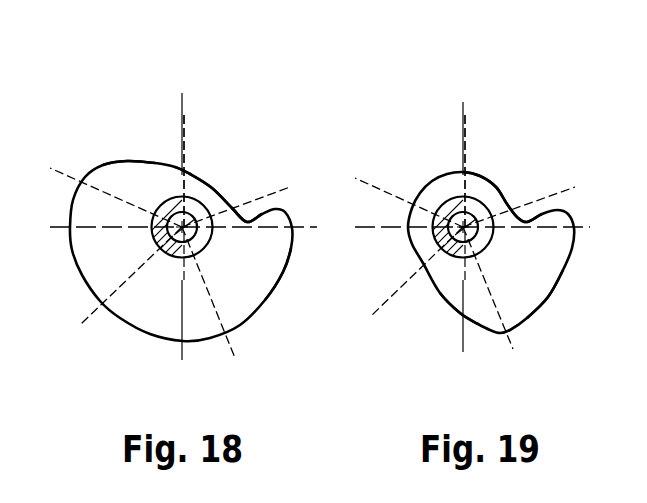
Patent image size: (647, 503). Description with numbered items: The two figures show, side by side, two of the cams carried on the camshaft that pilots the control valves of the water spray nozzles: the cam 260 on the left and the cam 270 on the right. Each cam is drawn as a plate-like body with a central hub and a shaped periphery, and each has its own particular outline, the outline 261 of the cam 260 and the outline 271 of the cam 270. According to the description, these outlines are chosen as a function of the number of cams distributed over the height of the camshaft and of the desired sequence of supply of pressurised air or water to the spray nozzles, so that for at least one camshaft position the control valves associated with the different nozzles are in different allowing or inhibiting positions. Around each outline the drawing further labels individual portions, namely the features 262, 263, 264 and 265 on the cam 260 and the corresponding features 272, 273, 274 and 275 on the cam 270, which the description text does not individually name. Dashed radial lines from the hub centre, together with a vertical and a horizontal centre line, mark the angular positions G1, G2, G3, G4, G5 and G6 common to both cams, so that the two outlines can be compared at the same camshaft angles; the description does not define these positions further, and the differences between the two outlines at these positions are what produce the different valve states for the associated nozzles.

In FIG. 18, the cam 260 is at (90, 162).
In FIG. 18, the outline 261 is at (188, 173).
In FIG. 18, the second cam surface 262 is at (215, 179).
In FIG. 18, the third cam surface 263 is at (276, 271).
In FIG. 18, the fourth cam surface 264 is at (133, 162).
In FIG. 18, the notch 265 is at (247, 222).
In FIG. 19, the cam 270 is at (467, 178).
In FIG. 19, the outline 271 is at (483, 191).
In FIG. 19, the second cam surface 272 is at (503, 197).
In FIG. 19, the third cam surface 273 is at (554, 291).
In FIG. 19, the fourth cam surface 274 is at (451, 309).
In FIG. 19, the notch 275 is at (527, 221).
In FIG. 18, the first angular position G1 is at (267, 228).
In FIG. 19, the first angular position G1 is at (555, 227).
In FIG. 18, the second angular position G2 is at (226, 338).
In FIG. 19, the second angular position G2 is at (503, 325).
In FIG. 18, the third angular position G3 is at (117, 290).
In FIG. 19, the third angular position G3 is at (400, 284).
In FIG. 18, the fourth angular position G4 is at (81, 164).
In FIG. 19, the fourth angular position G4 is at (393, 196).
In FIG. 18, the fifth angular position G5 is at (187, 128).
In FIG. 19, the fifth angular position G5 is at (467, 135).
In FIG. 18, the sixth angular position G6 is at (271, 189).
In FIG. 19, the sixth angular position G6 is at (535, 201).